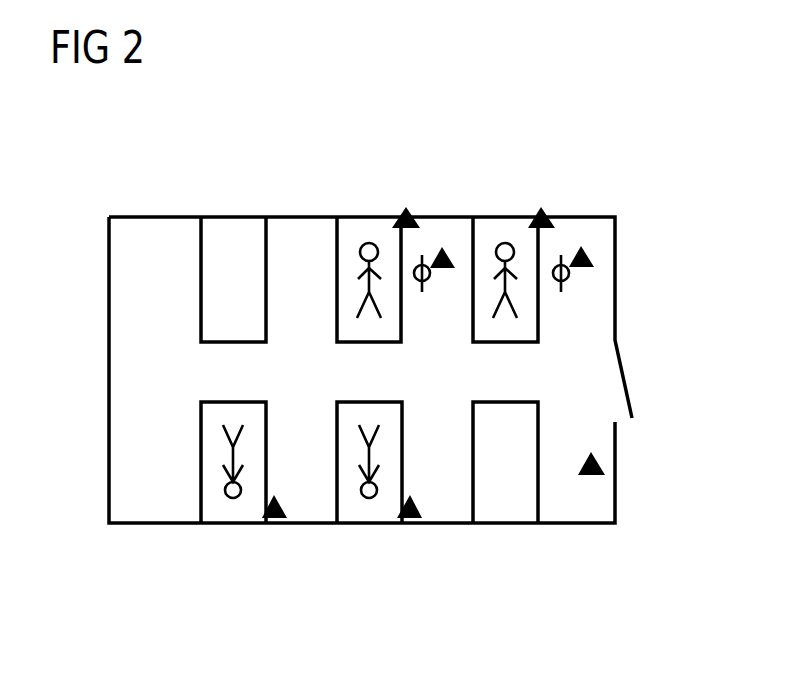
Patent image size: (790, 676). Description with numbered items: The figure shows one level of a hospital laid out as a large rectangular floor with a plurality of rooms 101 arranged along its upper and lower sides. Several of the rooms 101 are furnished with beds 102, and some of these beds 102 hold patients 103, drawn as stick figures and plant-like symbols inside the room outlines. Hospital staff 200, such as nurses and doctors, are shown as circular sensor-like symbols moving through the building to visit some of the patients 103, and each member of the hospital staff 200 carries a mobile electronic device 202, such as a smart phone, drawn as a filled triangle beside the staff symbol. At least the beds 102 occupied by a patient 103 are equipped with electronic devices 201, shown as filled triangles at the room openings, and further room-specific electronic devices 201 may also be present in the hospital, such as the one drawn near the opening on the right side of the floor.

The room 101 is at (142, 217).
The bed 102 is at (228, 232).
The patient 103 is at (365, 237).
The hospital staff 200 is at (430, 279).
The electronic device 201 is at (412, 208).
The mobile electronic device 202 is at (455, 237).